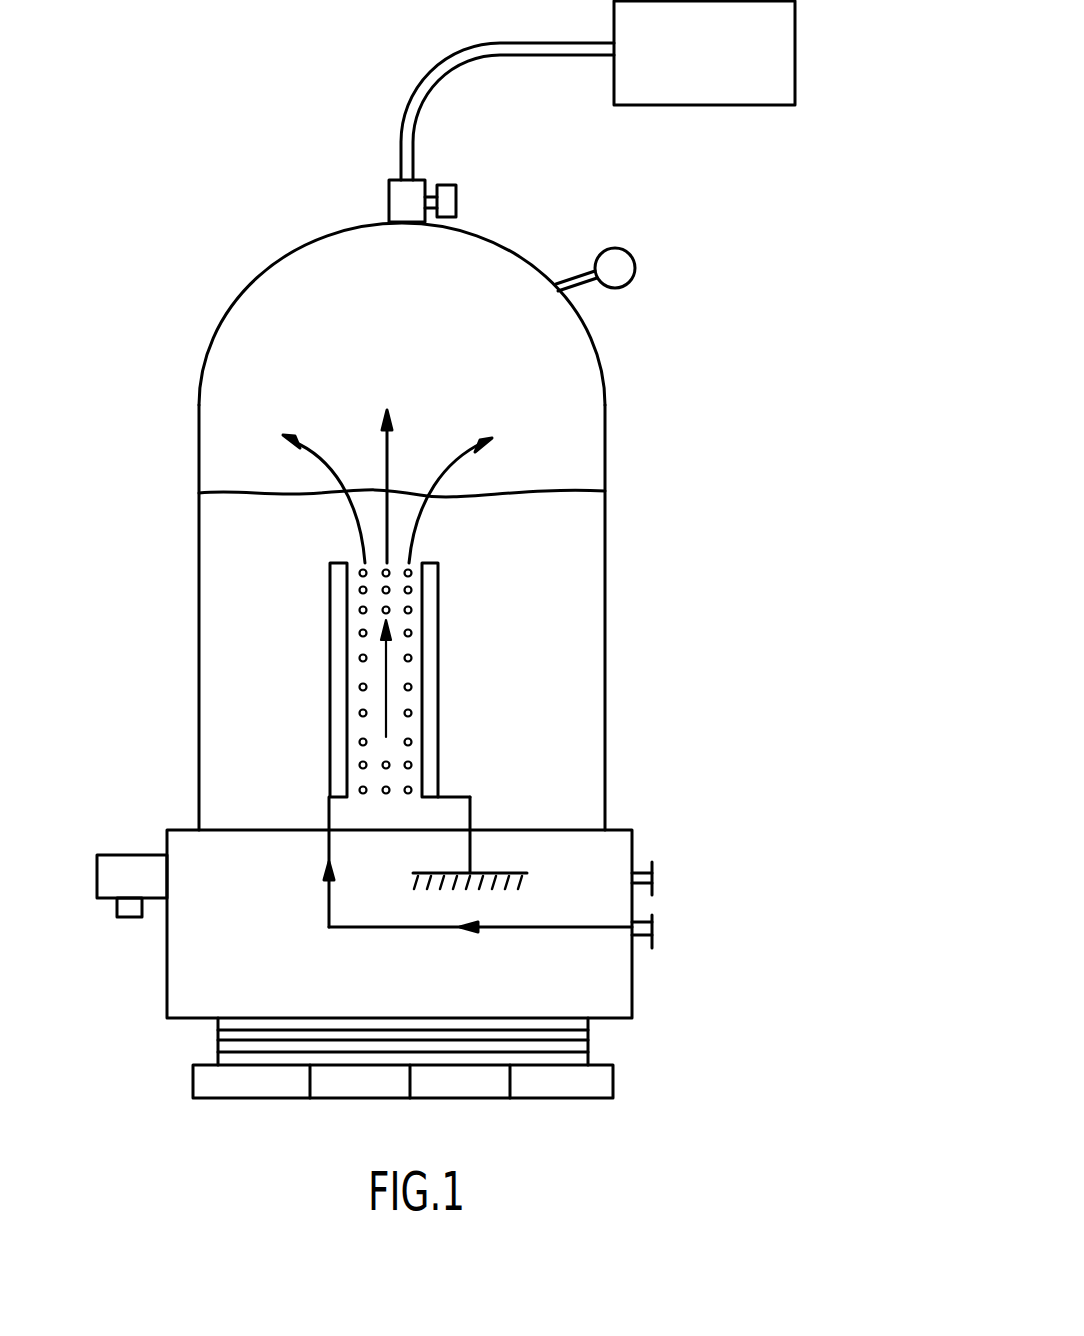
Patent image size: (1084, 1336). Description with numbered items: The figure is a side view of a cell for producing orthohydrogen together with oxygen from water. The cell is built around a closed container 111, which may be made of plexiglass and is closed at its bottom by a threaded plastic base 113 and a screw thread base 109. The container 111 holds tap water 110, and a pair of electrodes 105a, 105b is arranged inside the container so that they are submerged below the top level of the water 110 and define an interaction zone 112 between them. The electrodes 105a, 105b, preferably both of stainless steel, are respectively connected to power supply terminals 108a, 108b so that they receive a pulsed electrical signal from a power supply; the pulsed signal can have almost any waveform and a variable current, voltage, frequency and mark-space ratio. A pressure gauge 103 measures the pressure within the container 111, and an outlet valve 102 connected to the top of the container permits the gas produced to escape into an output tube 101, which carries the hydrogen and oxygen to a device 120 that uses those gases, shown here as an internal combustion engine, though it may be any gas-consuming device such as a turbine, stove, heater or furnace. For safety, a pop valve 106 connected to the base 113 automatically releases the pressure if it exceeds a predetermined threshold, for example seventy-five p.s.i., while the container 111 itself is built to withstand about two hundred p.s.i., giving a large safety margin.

The output tube 101 is at (430, 98).
The outlet valve 102 is at (456, 200).
The pressure gauge 103 is at (636, 270).
The electrode 105a is at (327, 665).
The electrode 105b is at (440, 650).
The pop valve 106 is at (115, 855).
The power supply terminal 108a is at (658, 925).
The power supply terminal 108b is at (655, 878).
The screw thread base 109 is at (614, 1048).
The tap water 110 is at (575, 530).
The closed container 111 is at (605, 400).
The interaction zone 112 is at (390, 777).
The threaded plastic base 113 is at (632, 993).
The device 120 is at (750, 107).